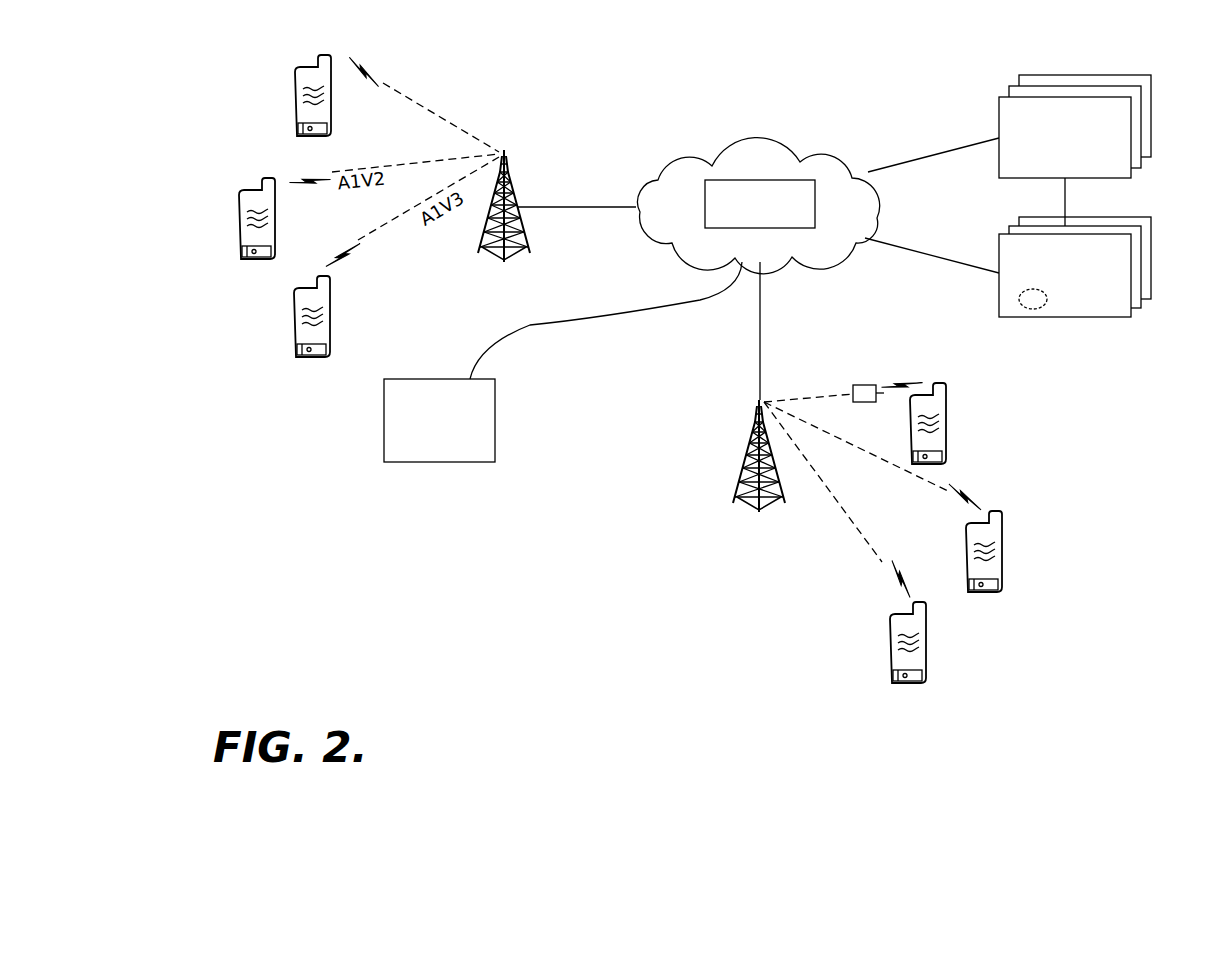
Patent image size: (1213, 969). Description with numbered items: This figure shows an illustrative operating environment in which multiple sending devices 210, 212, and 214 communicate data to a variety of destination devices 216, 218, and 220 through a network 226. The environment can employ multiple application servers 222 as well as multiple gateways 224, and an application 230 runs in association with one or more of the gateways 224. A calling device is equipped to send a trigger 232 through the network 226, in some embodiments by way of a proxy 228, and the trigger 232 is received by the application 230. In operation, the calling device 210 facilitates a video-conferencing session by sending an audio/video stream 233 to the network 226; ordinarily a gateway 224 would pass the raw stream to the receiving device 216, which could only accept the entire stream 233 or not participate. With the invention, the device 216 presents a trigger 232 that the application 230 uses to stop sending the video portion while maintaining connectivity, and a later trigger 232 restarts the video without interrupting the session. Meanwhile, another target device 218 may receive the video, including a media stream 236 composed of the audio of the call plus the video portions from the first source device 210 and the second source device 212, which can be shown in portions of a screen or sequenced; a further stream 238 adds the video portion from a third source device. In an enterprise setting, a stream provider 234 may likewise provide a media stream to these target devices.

The sending device 210 is at (292, 118).
The sending device 212 is at (252, 259).
The sending device 214 is at (310, 357).
The destination device 216 is at (947, 402).
The destination device 218 is at (978, 593).
The destination device 220 is at (905, 684).
The application servers 222 is at (1125, 180).
The gateways 224 is at (1125, 319).
The network 226 is at (758, 153).
The proxy 228 is at (815, 180).
The application 230 is at (1035, 310).
The trigger 232 is at (865, 385).
The audio/video stream 233 is at (412, 95).
The stream provider 234 is at (438, 462).
The media stream 236 is at (855, 448).
The media stream 238 is at (842, 508).